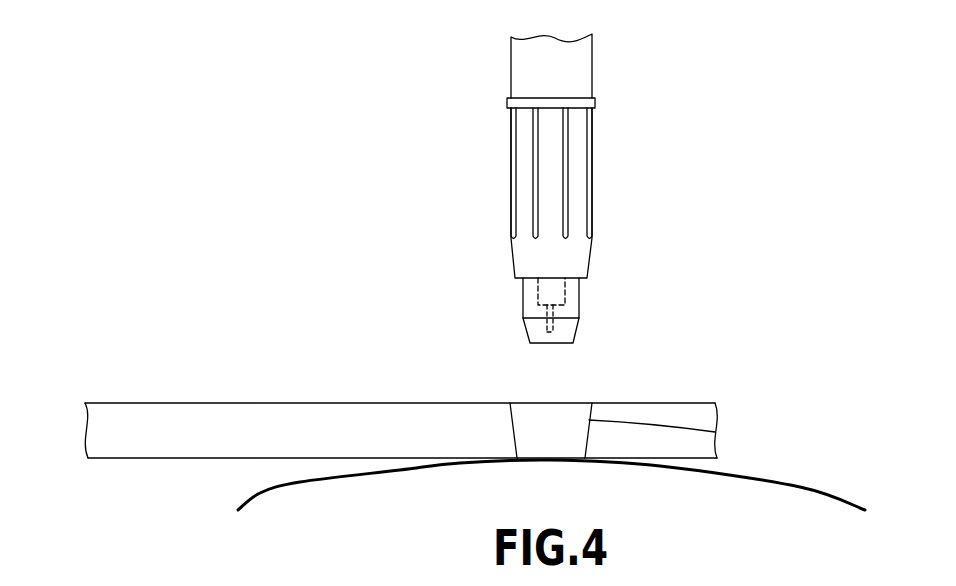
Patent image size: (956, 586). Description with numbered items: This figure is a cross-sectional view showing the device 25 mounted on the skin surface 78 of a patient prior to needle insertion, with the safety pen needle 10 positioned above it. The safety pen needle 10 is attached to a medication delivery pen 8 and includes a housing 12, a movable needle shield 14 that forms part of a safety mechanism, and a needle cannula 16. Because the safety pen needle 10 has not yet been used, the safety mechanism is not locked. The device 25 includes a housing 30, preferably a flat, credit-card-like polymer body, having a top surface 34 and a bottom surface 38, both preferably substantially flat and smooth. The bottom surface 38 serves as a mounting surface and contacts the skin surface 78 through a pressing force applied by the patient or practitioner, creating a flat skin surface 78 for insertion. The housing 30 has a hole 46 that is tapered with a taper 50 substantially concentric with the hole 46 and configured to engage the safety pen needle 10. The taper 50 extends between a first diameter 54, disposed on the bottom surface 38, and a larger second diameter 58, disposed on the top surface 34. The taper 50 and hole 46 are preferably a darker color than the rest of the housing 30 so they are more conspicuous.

The medication delivery pen 8 is at (592, 68).
The safety pen needle 10 is at (583, 210).
The housing 12 is at (510, 173).
The movable needle shield 14 is at (572, 302).
The needle cannula 16 is at (548, 326).
The device 25 is at (110, 195).
The housing 30 is at (391, 423).
The top surface 34 is at (143, 403).
The bottom surface 38 is at (138, 458).
The hole 46 is at (555, 415).
The taper 50 is at (715, 432).
The first diameter 54 is at (586, 462).
The second diameter 58 is at (591, 405).
The skin surface 78 is at (793, 474).